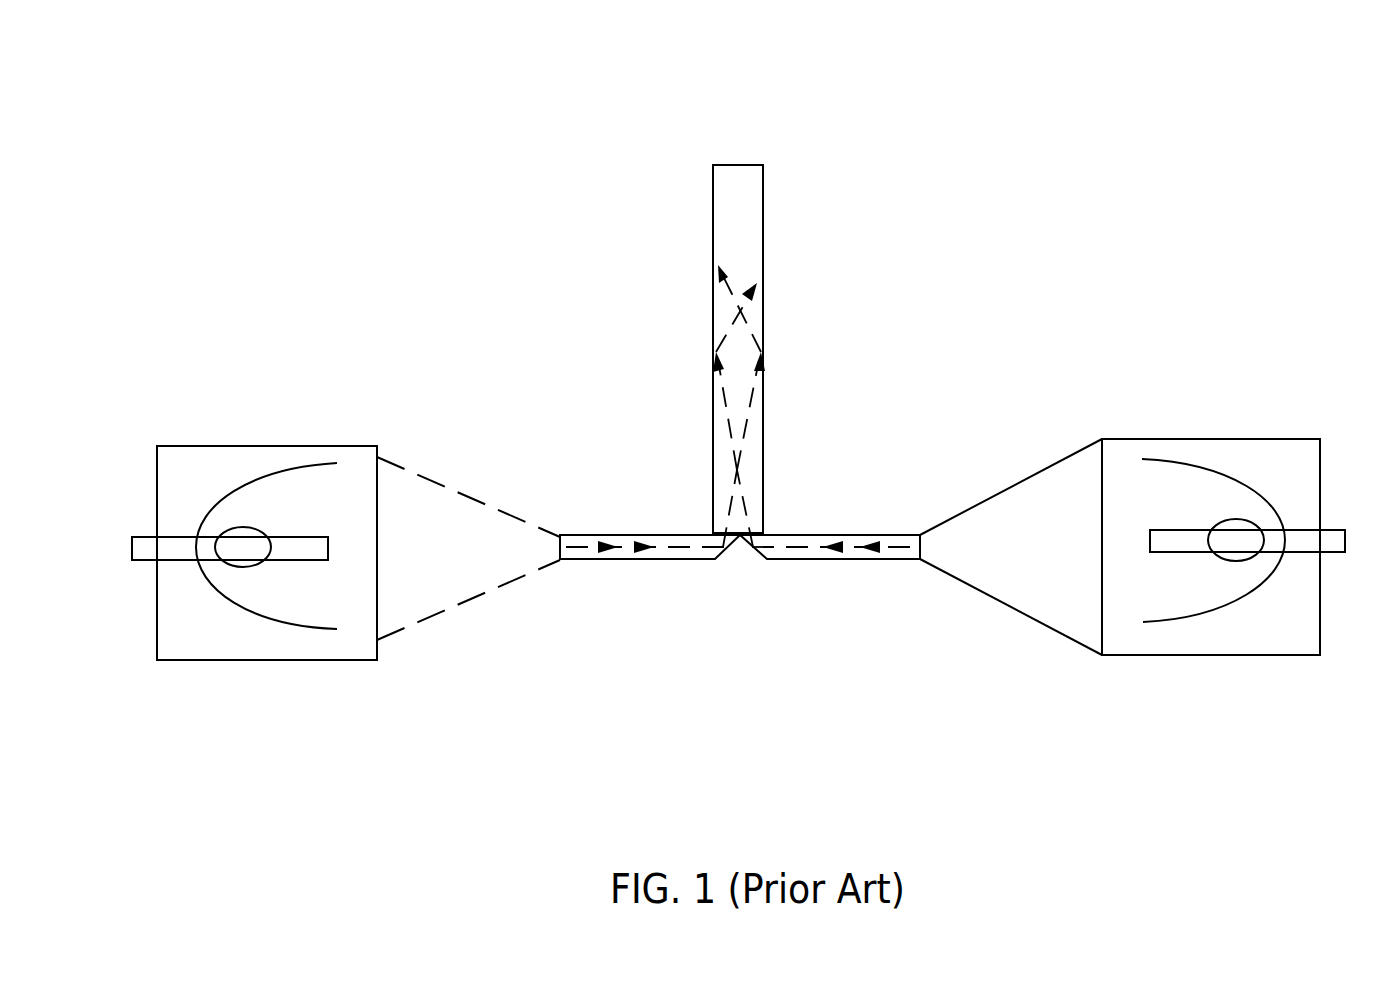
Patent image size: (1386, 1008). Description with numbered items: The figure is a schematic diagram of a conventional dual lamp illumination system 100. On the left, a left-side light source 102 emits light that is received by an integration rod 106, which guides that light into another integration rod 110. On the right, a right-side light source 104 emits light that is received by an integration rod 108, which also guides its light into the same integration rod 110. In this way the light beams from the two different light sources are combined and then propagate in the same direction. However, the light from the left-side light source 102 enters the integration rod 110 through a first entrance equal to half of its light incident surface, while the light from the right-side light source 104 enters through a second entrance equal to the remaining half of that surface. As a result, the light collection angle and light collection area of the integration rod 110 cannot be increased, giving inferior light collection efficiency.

The dual lamp illumination system 100 is at (378, 57).
The left-side light source 102 is at (288, 445).
The right-side light source 104 is at (1190, 438).
The integration rod 106 is at (650, 558).
The integration rod 108 is at (840, 558).
The integration rod 110 is at (763, 218).